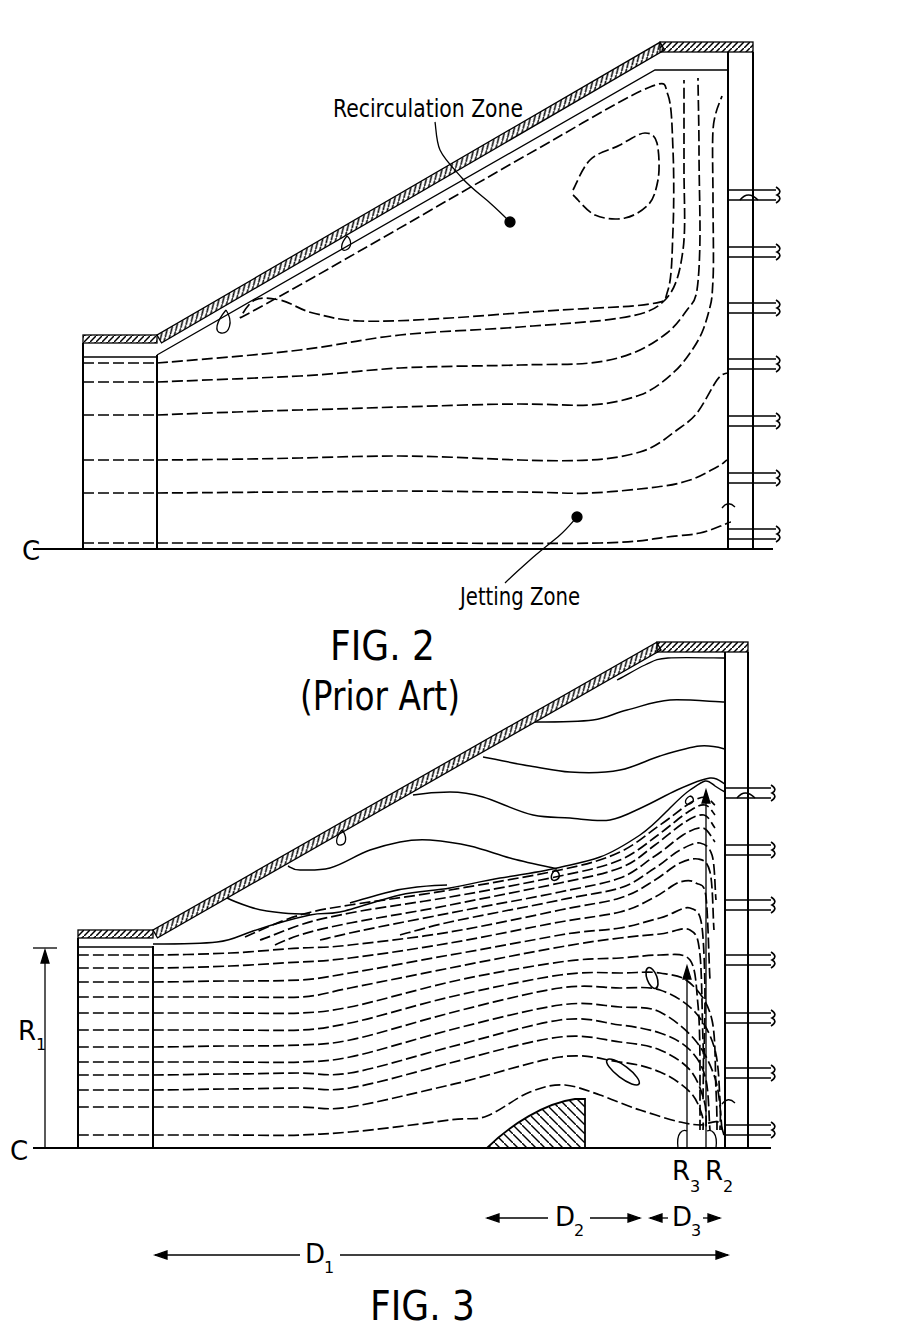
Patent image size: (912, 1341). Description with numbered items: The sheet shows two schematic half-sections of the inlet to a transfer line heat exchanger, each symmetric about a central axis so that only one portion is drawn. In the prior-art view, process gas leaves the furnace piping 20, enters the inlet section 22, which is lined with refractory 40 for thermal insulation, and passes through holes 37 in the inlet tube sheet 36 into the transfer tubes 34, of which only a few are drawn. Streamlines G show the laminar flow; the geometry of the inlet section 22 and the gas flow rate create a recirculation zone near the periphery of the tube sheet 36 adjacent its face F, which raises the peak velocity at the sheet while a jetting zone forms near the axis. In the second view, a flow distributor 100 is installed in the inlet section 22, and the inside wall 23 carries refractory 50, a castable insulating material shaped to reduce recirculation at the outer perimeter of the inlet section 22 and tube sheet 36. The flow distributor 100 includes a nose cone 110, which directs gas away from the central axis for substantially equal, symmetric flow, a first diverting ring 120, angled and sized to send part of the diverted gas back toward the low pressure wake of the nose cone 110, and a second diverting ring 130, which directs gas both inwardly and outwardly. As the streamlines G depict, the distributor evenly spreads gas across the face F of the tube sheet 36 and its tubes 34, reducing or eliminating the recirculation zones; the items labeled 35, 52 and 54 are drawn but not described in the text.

In FIG. 2, the furnace piping 20 is at (112, 335).
In FIG. 3, the furnace piping 20 is at (105, 930).
In FIG. 2, the inlet section 22 is at (287, 268).
In FIG. 3, the inlet section 22 is at (278, 863).
In FIG. 2, the inside wall 23 is at (347, 236).
In FIG. 3, the inside wall 23 is at (342, 830).
In FIG. 2, the transfer tubes 34 is at (778, 190).
In FIG. 3, the transfer tubes 34 is at (773, 790).
In FIG. 2, the heat exchanger tube 35 is at (760, 258).
In FIG. 3, the heat exchanger tube 35 is at (757, 856).
In FIG. 2, the inlet tube sheet 36 is at (745, 45).
In FIG. 3, the inlet tube sheet 36 is at (738, 665).
In FIG. 2, the holes 37 is at (747, 199).
In FIG. 3, the holes 37 is at (746, 798).
In FIG. 2, the refractory 40 is at (220, 312).
In FIG. 3, the refractory 50 is at (598, 769).
In FIG. 3, the shear layer boundary 52 is at (555, 870).
In FIG. 3, the jet peak 54 is at (686, 792).
In FIG. 3, the flow distributor 100 is at (452, 1154).
In FIG. 3, the nose cone 110 is at (516, 1112).
In FIG. 3, the first diverting ring 120 is at (611, 1058).
In FIG. 3, the second diverting ring 130 is at (648, 967).
In FIG. 2, the face F is at (722, 508).
In FIG. 3, the face F is at (722, 1104).
In FIG. 2, the streamlines G is at (360, 495).
In FIG. 3, the streamlines G is at (238, 1105).